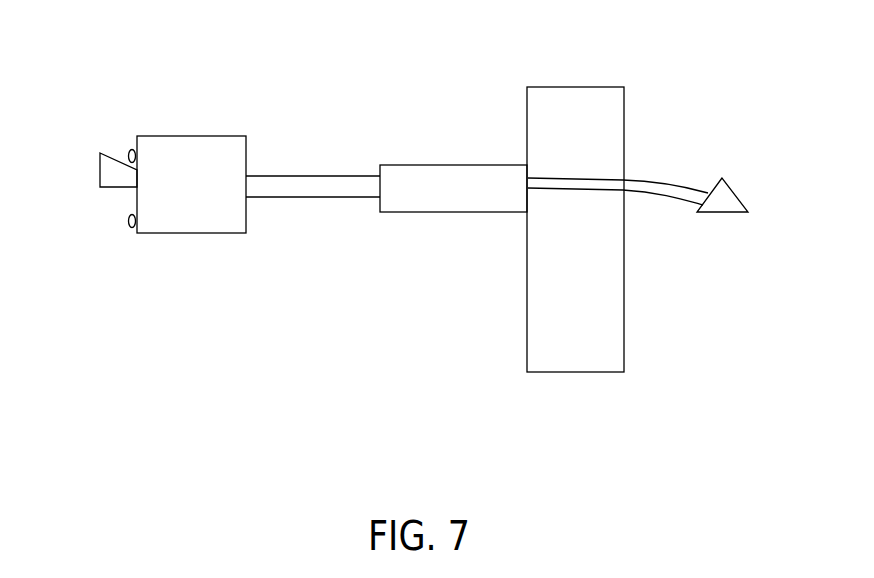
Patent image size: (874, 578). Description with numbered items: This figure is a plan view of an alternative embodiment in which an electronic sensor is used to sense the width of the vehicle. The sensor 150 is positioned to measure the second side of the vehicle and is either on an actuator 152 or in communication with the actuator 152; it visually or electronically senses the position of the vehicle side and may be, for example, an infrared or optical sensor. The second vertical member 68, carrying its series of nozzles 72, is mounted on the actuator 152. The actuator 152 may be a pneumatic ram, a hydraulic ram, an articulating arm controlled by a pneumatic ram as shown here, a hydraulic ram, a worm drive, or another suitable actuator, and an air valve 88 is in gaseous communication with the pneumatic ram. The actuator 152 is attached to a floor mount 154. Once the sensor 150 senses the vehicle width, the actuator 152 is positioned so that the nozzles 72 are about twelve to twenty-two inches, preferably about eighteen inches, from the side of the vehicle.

The second vertical member 68 is at (217, 205).
The second series of nozzles 72 is at (110, 177).
The air valve 88 is at (727, 202).
The sensor 150 is at (131, 150).
The actuator 152 is at (320, 175).
The floor mount 154 is at (579, 350).